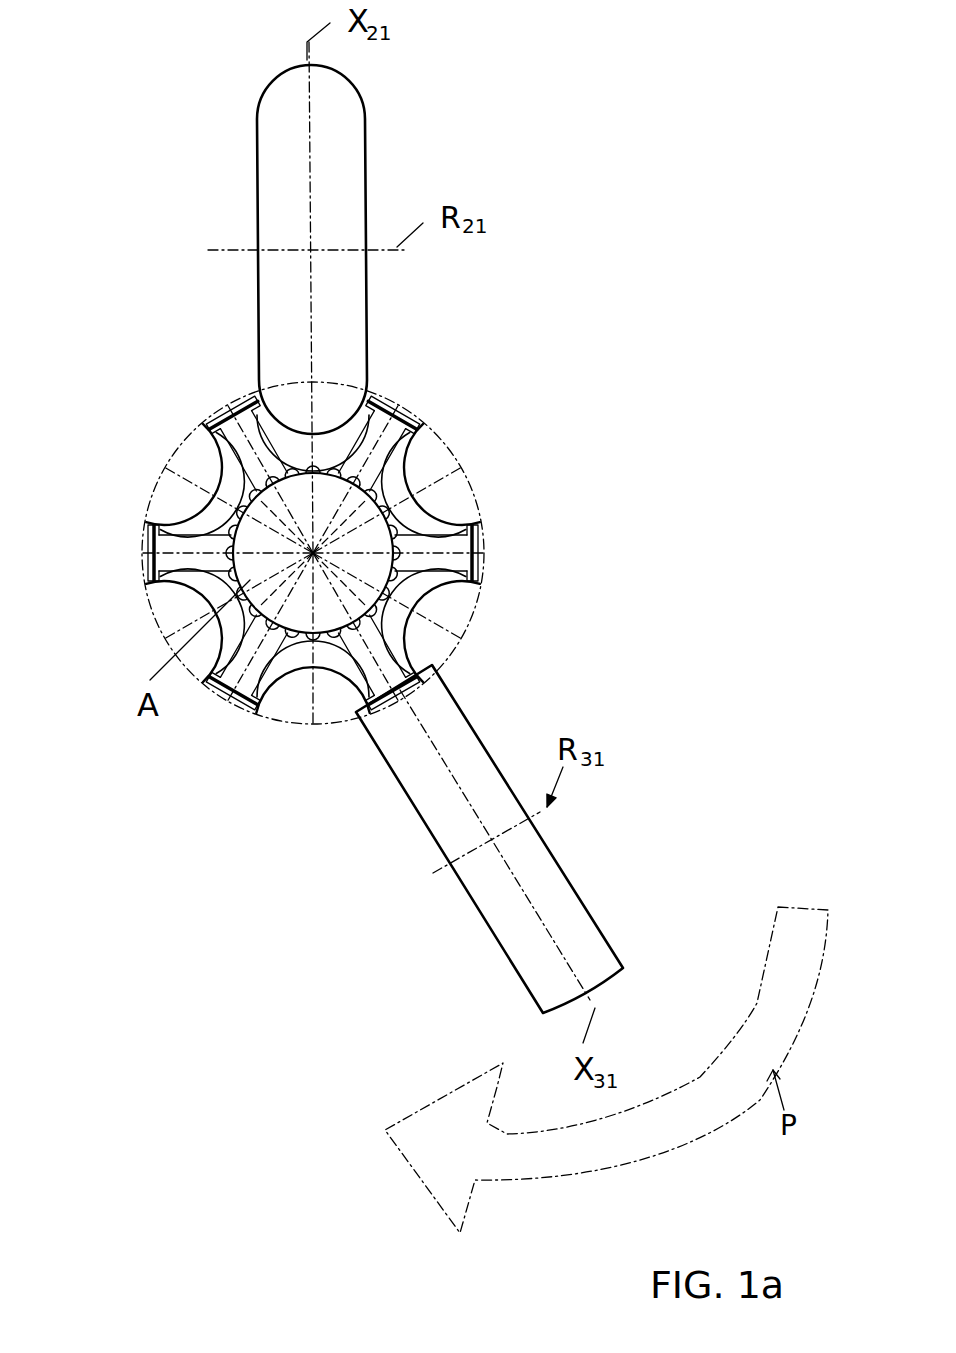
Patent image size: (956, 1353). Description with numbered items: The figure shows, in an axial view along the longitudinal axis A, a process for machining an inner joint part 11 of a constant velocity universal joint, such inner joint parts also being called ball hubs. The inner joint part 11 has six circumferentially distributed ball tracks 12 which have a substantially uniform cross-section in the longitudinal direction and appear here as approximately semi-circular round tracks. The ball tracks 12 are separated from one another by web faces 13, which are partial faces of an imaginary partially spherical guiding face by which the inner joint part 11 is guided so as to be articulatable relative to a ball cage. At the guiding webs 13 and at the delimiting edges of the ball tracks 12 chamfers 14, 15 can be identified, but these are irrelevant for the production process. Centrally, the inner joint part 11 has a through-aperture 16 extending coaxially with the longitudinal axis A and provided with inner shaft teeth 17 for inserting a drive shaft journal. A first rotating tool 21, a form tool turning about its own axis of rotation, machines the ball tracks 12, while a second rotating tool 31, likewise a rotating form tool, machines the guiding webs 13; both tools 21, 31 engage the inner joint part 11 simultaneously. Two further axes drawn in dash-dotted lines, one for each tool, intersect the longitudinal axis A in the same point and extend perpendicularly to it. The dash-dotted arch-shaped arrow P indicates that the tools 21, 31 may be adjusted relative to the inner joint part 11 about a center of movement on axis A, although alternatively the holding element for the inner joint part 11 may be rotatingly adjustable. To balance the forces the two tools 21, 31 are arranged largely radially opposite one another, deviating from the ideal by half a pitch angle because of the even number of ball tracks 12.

The inner joint part 11 is at (323, 383).
The ball tracks 12 is at (382, 497).
The web faces 13 is at (400, 413).
The chamfer 14 is at (413, 430).
The chamfer 15 is at (478, 516).
The through-aperture 16 is at (458, 614).
The inner shaft teeth 17 is at (415, 600).
The first rotating tool 21 is at (390, 150).
The second rotating tool 31 is at (588, 887).